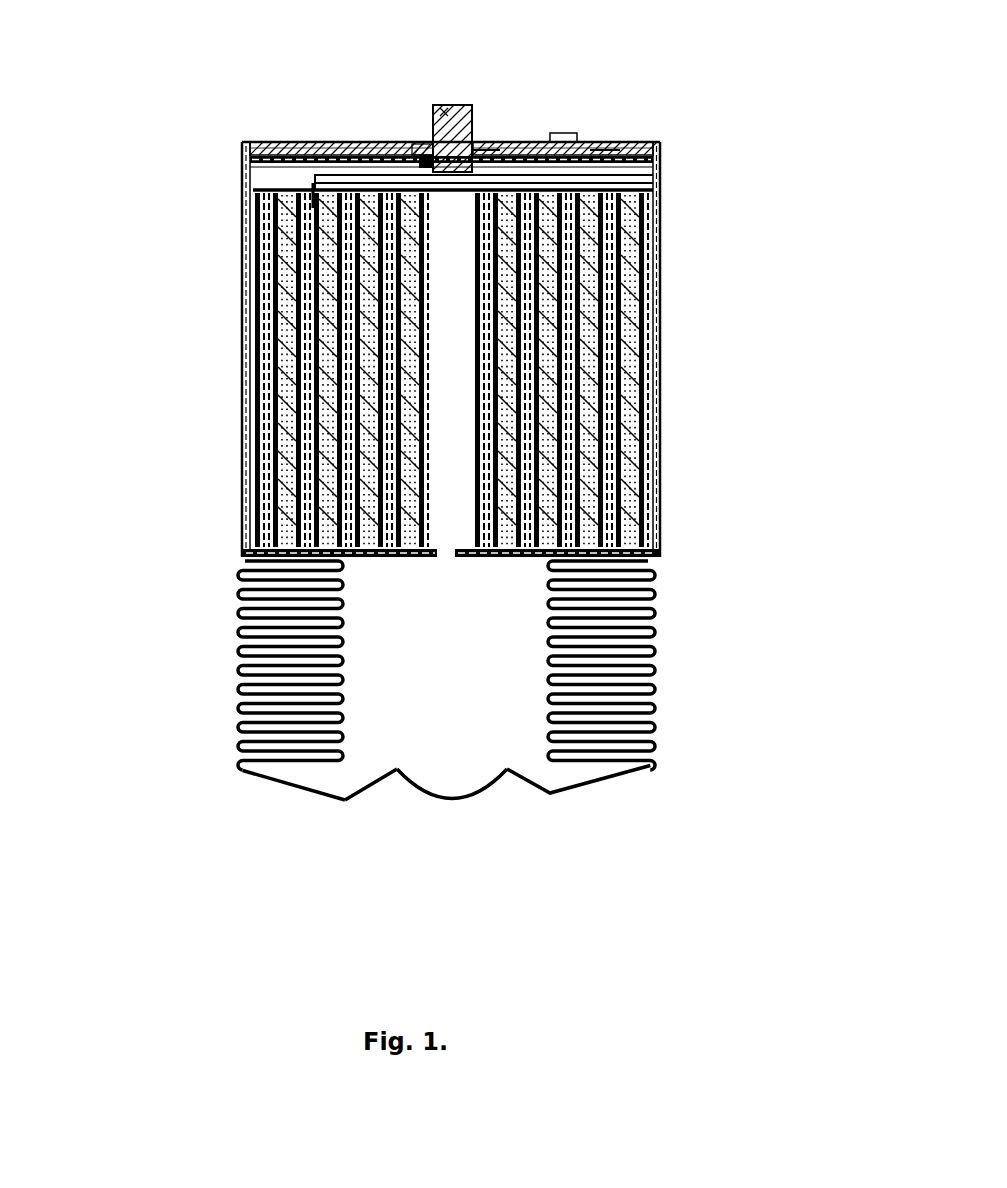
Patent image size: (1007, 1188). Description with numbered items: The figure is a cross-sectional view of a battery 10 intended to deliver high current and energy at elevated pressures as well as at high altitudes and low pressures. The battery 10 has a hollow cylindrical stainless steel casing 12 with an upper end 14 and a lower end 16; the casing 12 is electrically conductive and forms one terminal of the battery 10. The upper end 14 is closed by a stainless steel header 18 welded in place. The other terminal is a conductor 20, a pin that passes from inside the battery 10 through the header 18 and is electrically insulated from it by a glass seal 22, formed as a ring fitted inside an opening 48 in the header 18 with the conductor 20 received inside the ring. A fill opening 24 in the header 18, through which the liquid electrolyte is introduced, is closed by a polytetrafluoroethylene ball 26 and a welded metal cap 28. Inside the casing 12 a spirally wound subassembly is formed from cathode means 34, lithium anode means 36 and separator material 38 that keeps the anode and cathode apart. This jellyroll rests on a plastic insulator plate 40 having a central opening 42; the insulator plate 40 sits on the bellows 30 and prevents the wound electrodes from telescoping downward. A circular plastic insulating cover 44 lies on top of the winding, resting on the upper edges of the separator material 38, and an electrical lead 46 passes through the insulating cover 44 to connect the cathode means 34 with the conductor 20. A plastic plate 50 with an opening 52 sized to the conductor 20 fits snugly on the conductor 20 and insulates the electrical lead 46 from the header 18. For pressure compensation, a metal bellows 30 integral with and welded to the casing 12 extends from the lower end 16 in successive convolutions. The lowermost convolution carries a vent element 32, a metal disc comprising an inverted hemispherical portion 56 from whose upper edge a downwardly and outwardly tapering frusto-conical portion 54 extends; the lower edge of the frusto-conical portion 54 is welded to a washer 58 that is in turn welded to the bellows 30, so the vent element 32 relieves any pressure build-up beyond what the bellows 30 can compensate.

The battery 10 is at (770, 170).
The casing 12 is at (661, 176).
The upper end 14 is at (478, 110).
The lower end 16 is at (498, 588).
The header 18 is at (310, 142).
The conductor 20 is at (454, 89).
The glass seal 22 is at (424, 157).
The fill opening 24 is at (570, 133).
The ball 26 is at (545, 158).
The cap 28 is at (600, 150).
The bellows 30 is at (218, 668).
The vent element 32 is at (447, 841).
The cathode means 34 is at (619, 370).
The lithium anode means 36 is at (660, 400).
The separator material 38 is at (660, 433).
The insulator plate 40 is at (500, 556).
The opening 42 is at (455, 556).
The insulating cover 44 is at (255, 186).
The electrical lead 46 is at (373, 160).
The opening 48 is at (490, 143).
The plastic plate 50 is at (278, 145).
The opening 52 is at (462, 104).
The frusto-conical portion 54 is at (376, 793).
The inverted hemispherical portion 56 is at (504, 803).
The washer 58 is at (300, 787).